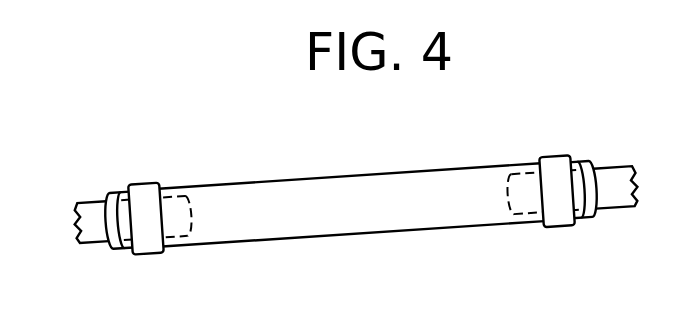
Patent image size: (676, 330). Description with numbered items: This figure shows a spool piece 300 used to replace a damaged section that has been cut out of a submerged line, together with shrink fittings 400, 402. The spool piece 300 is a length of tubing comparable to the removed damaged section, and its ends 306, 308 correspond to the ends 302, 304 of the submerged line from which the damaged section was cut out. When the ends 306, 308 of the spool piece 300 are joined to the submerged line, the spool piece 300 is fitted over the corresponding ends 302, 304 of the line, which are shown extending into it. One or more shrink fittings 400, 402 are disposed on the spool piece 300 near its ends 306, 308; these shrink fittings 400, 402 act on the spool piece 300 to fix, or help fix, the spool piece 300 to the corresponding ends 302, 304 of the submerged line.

The spool piece 300 is at (293, 240).
The end of submerged line 302 is at (80, 243).
The end of submerged line 304 is at (619, 206).
The end of spool piece 306 is at (110, 194).
The end of spool piece 308 is at (591, 166).
The shrink fitting 400 is at (146, 186).
The shrink fitting 402 is at (551, 158).